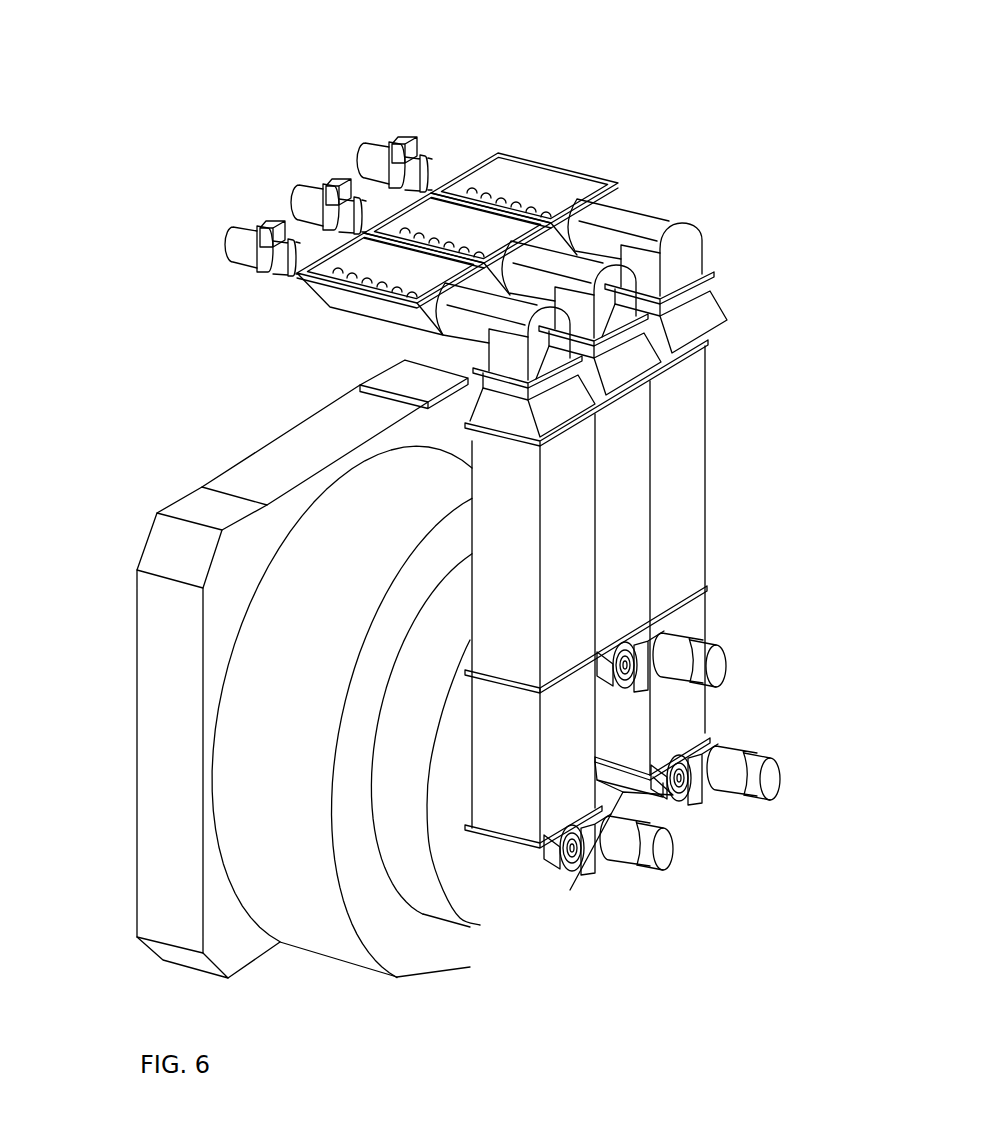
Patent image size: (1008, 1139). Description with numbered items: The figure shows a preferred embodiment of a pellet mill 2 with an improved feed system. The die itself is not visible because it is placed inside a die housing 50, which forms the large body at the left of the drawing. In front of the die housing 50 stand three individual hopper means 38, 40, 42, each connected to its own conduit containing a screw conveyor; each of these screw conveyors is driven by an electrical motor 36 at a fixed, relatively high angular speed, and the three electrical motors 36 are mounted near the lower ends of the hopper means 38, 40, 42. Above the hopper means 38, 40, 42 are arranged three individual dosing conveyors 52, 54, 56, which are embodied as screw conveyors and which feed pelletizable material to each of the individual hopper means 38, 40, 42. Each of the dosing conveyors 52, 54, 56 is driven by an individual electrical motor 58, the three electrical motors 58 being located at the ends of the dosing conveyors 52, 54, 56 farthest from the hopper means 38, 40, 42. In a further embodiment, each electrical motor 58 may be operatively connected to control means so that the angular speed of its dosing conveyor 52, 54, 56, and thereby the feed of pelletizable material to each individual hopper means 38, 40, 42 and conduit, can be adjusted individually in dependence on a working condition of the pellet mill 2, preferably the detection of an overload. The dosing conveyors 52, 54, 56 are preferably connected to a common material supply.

The pellet mill 2 is at (150, 392).
The electrical motor 36 is at (713, 665).
The hopper means 38 is at (623, 473).
The hopper means 40 is at (673, 405).
The hopper means 42 is at (563, 543).
The die housing 50 is at (298, 635).
The dosing conveyor 52 is at (318, 310).
The dosing conveyor 54 is at (482, 240).
The dosing conveyor 56 is at (495, 195).
The electrical motor 58 is at (246, 216).